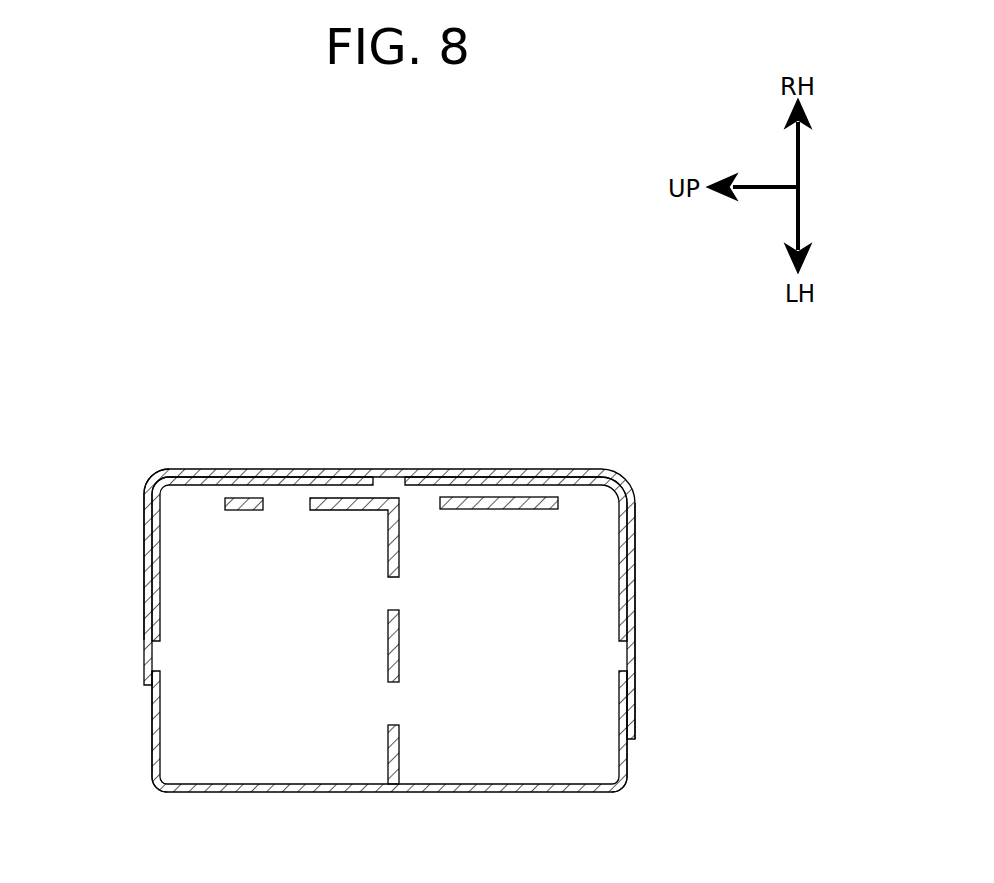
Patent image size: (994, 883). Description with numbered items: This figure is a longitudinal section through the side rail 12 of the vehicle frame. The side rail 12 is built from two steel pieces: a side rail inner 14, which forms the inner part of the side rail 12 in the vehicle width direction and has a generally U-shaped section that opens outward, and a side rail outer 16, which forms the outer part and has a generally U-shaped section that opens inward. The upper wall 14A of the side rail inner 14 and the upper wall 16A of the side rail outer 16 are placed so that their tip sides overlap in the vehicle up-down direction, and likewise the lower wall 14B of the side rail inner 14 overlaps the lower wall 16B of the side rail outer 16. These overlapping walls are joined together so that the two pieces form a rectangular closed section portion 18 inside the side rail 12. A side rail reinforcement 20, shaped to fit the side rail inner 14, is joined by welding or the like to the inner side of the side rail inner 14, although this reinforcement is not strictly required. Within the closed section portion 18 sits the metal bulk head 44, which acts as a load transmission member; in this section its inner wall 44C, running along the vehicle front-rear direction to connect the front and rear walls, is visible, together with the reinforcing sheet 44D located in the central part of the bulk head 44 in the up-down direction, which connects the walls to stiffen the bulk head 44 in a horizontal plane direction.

The side rail 12 is at (647, 392).
The side rail inner 14 is at (626, 485).
The upper wall of side rail inner 14A is at (147, 643).
The lower wall of side rail inner 14B is at (636, 646).
The side rail outer 16 is at (581, 794).
The upper wall of side rail outer 16A is at (163, 715).
The lower wall of side rail outer 16B is at (617, 703).
The closed section portion 18 is at (482, 662).
The side rail reinforcement 20 is at (617, 540).
The bulk head 44 is at (386, 738).
The inner wall 44C is at (473, 495).
The reinforcing sheet 44D is at (388, 646).